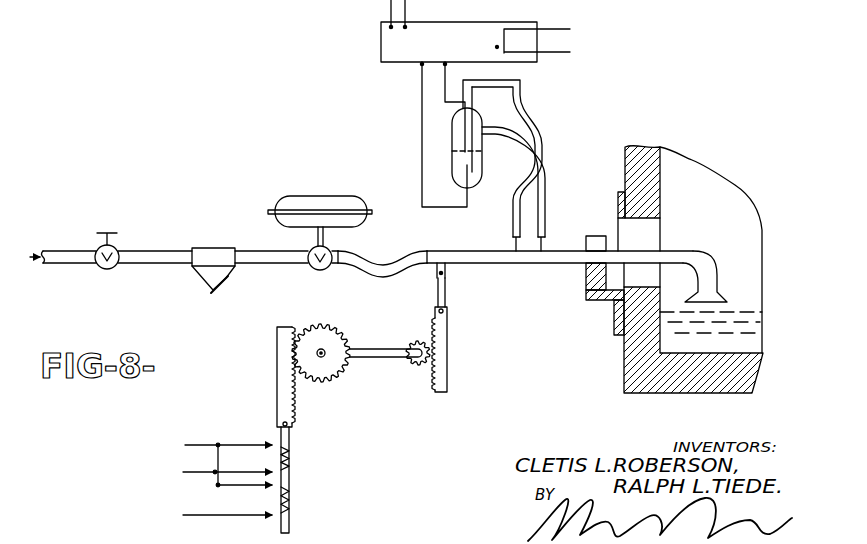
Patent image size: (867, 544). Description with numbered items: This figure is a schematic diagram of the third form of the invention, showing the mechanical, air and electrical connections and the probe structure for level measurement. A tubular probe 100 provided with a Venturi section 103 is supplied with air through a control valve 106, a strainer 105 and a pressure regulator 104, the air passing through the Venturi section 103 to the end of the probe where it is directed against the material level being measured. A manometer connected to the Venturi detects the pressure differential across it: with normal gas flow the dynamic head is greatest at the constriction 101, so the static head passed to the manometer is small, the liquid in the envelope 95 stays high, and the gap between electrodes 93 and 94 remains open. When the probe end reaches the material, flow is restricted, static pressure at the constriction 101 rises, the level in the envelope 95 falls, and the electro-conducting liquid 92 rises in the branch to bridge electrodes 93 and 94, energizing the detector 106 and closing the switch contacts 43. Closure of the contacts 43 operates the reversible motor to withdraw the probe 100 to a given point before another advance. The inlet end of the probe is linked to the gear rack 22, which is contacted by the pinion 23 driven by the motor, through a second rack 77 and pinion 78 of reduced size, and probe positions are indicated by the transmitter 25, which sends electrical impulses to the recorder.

The gear rack 22 is at (292, 402).
The pinion 23 is at (340, 328).
The transmitter 25 is at (292, 468).
The switch contacts 43 is at (533, 42).
The second rack 77 is at (447, 371).
The pinion 78 is at (426, 342).
The electro-conducting liquid 92 is at (483, 178).
The electrode 93 is at (467, 172).
The electrode 94 is at (465, 137).
The envelope 95 is at (483, 116).
The tubular probe 100 is at (693, 253).
The constriction 101 is at (535, 252).
The Venturi section 103 is at (530, 265).
The pressure regulator 104 is at (318, 180).
The strainer 105 is at (222, 250).
The control valve 106 is at (100, 270).